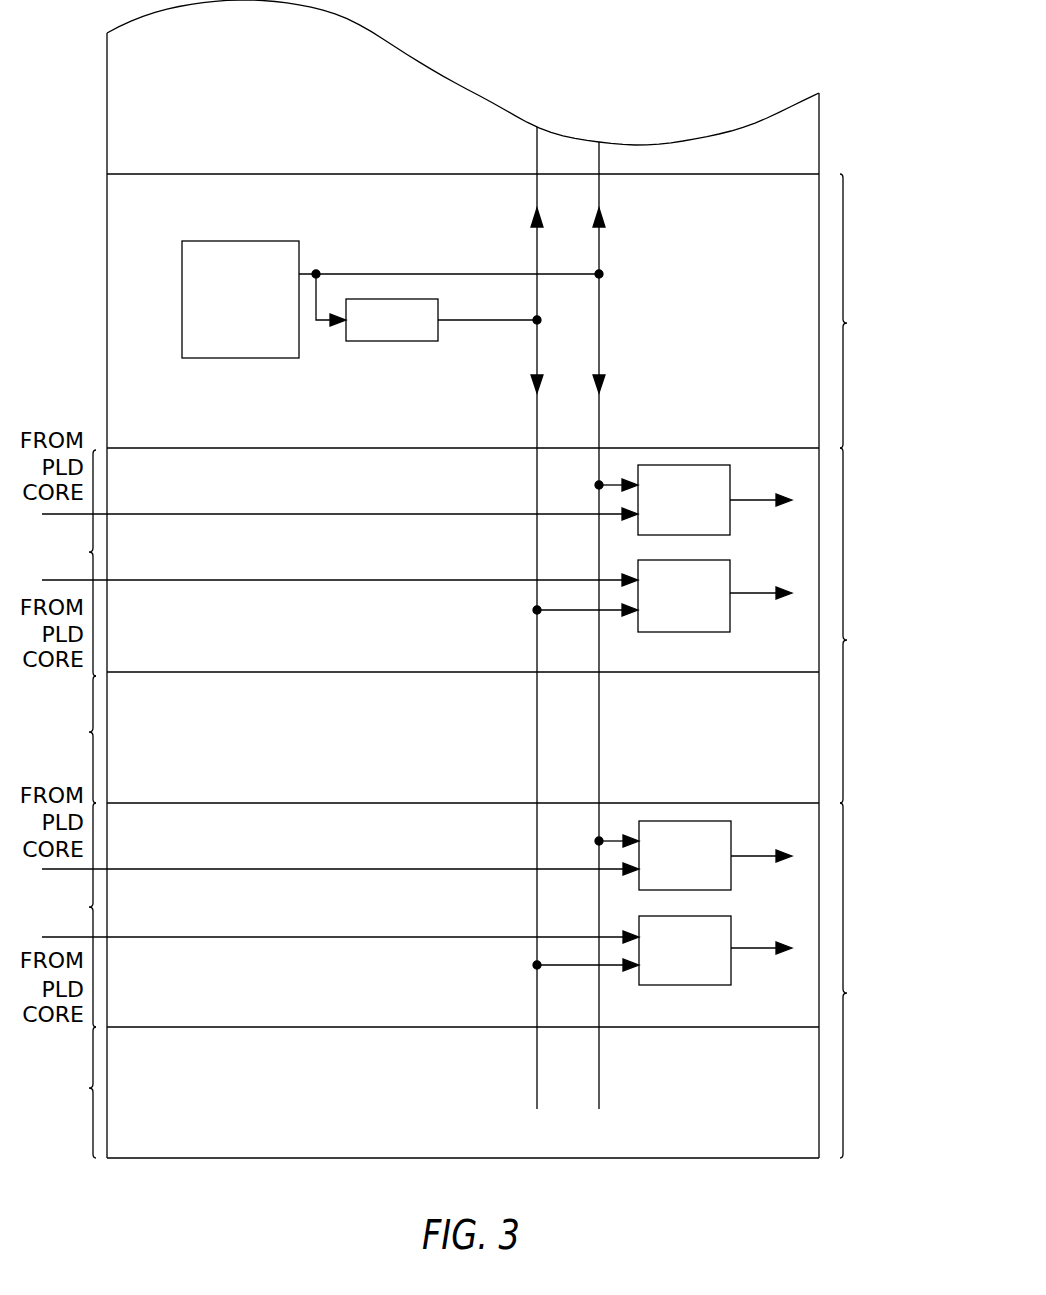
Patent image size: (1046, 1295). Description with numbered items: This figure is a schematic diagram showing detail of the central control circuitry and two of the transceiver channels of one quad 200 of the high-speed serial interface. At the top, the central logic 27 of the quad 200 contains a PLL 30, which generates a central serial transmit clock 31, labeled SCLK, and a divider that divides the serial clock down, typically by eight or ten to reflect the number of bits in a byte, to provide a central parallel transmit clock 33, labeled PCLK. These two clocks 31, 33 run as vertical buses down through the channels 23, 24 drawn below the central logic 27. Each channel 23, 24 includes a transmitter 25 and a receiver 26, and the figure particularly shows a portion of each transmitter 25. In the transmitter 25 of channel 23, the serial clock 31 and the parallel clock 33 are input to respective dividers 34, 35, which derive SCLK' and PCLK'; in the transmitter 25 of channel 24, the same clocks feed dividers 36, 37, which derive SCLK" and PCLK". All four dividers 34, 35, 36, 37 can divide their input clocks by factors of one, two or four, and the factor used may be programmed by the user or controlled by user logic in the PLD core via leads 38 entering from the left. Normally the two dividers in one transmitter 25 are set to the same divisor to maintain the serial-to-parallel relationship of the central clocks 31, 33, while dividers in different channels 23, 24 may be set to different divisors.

The grouping 200 is at (838, 98).
The central logic 27 is at (863, 311).
The channel 23 is at (496, 625).
The channel 24 is at (496, 980).
The transmitter 25 is at (105, 738).
The receiver 26 is at (104, 917).
The PLL 30 is at (231, 258).
The central serial transmit clock 31 is at (600, 240).
The central parallel transmit clock 33 is at (537, 200).
The divider 34 is at (733, 518).
The divider 35 is at (668, 633).
The divider 36 is at (723, 890).
The divider 37 is at (663, 986).
The leads 38 is at (322, 514).